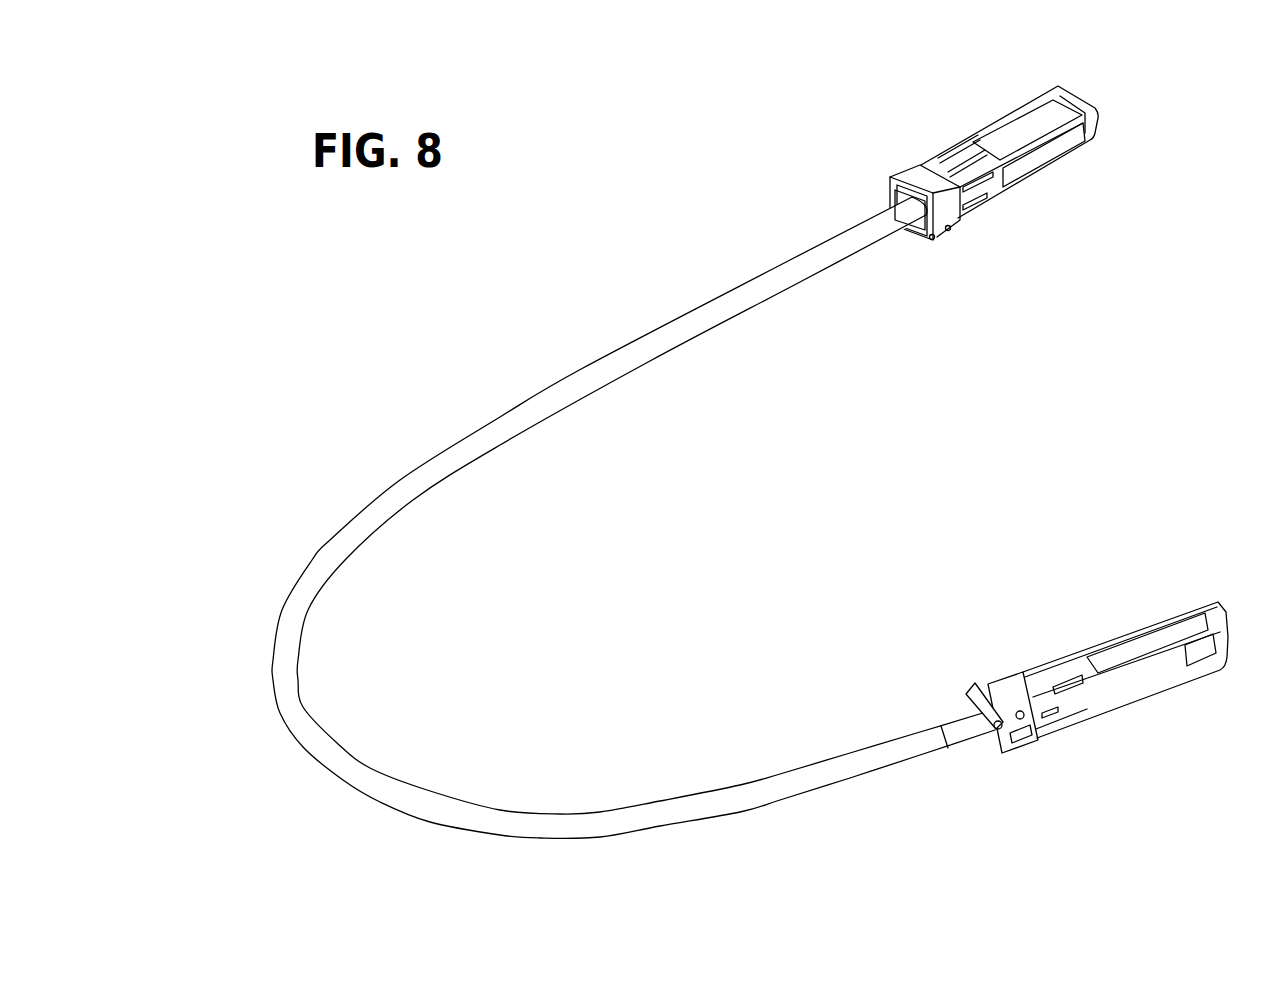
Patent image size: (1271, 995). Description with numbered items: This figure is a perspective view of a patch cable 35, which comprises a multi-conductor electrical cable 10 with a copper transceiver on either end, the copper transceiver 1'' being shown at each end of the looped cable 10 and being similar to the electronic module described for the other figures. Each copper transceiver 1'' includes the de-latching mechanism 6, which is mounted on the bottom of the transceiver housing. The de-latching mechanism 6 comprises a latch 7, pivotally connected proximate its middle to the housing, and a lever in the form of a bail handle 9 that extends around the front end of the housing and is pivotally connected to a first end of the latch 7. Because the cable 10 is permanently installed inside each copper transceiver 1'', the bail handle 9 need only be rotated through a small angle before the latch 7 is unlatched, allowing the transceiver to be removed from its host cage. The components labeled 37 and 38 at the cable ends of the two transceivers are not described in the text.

The copper transceiver 1'' is at (1074, 393).
The de-latching mechanism 6 is at (923, 303).
The latch 7 is at (1020, 733).
The bail handle 9 is at (890, 187).
The multi-conductor electrical cable 10 is at (583, 368).
The patch cable 35 is at (418, 381).
The connector rear body 37 is at (920, 173).
The connector rear body 38 is at (1002, 675).